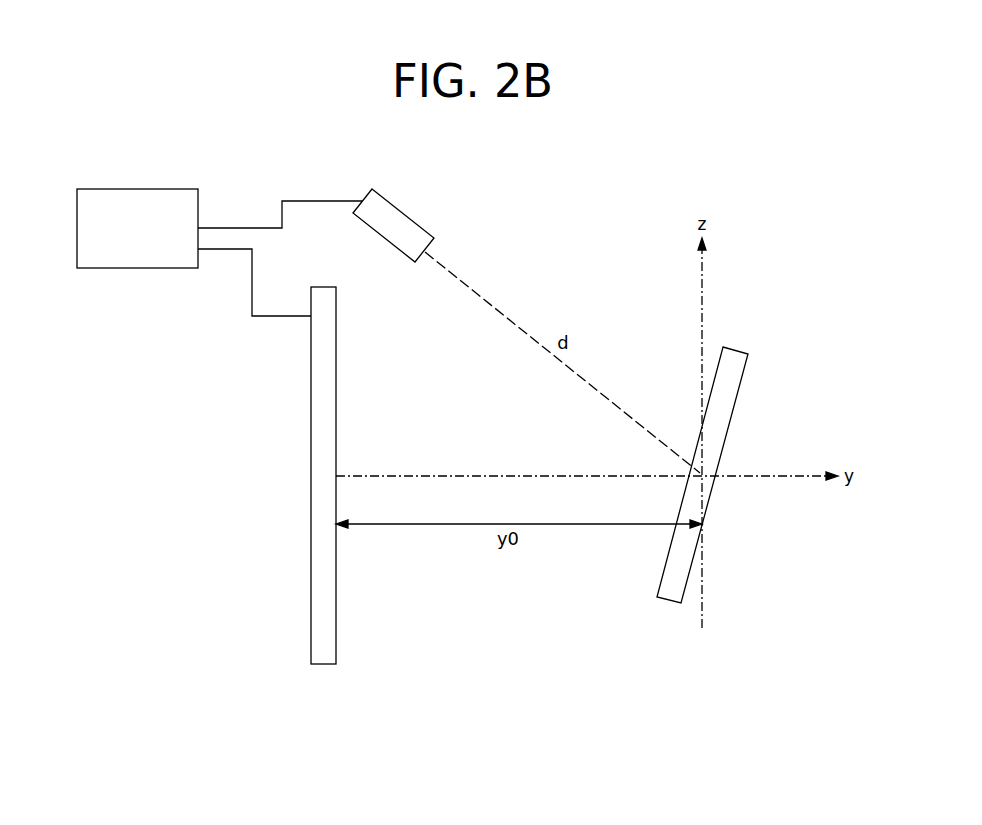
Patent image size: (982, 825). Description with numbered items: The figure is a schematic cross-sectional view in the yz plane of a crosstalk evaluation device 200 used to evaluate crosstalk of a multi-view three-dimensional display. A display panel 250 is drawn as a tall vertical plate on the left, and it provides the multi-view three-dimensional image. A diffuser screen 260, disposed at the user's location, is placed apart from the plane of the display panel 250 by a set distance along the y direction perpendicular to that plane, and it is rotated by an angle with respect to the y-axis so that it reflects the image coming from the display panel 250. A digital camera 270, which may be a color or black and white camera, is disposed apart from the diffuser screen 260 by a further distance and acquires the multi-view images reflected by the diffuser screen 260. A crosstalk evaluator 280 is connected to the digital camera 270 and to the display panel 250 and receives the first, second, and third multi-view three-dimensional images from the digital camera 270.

The crosstalk evaluation device 200 is at (793, 208).
The display panel 250 is at (322, 664).
The diffuser screen 260 is at (670, 602).
The digital camera 270 is at (385, 237).
The crosstalk evaluator 280 is at (137, 268).